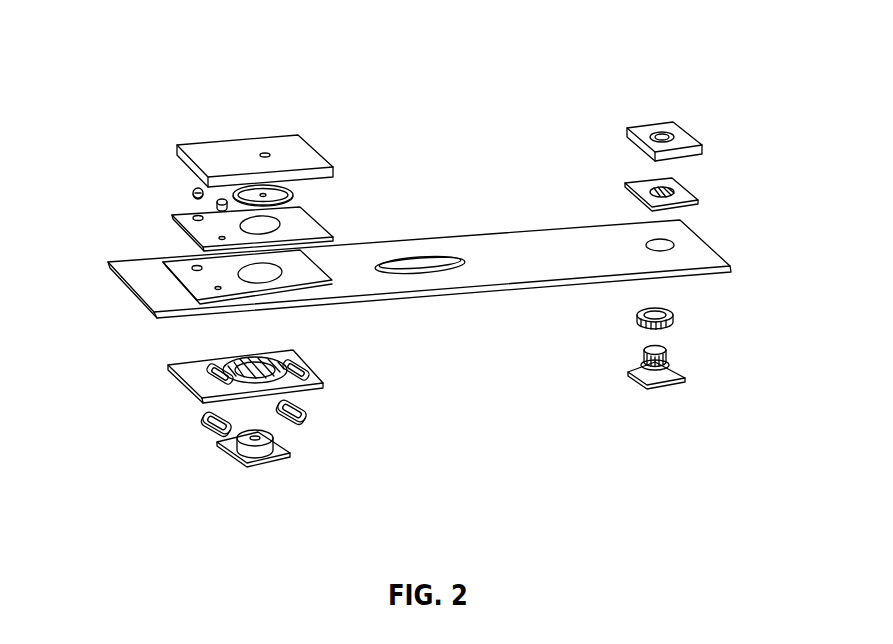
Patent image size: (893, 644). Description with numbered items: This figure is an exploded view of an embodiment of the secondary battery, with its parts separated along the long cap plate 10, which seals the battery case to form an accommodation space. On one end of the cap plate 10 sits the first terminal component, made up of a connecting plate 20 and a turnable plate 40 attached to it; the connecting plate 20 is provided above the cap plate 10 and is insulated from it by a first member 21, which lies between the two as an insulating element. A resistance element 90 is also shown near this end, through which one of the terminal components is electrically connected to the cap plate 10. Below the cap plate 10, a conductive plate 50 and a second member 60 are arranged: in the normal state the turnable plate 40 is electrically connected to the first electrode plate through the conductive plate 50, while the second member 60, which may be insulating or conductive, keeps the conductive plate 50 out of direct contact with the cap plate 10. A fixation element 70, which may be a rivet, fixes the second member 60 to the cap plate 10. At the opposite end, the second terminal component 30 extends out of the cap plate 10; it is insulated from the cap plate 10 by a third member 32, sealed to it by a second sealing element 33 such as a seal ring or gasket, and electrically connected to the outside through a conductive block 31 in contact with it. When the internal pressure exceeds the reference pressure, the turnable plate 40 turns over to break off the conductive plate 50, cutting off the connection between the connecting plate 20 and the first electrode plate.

The cap plate 10 is at (488, 265).
The connecting plate 20 is at (295, 147).
The first member 21 is at (203, 247).
The second terminal component 30 is at (683, 380).
The conductive block 31 is at (683, 138).
The third member 32 is at (683, 195).
The second sealing element 33 is at (703, 300).
The turnable plate 40 is at (297, 197).
The conductive plate 50 is at (283, 458).
The second member 60 is at (197, 375).
The fixation element 70 is at (303, 418).
The resistance element 90 is at (192, 192).